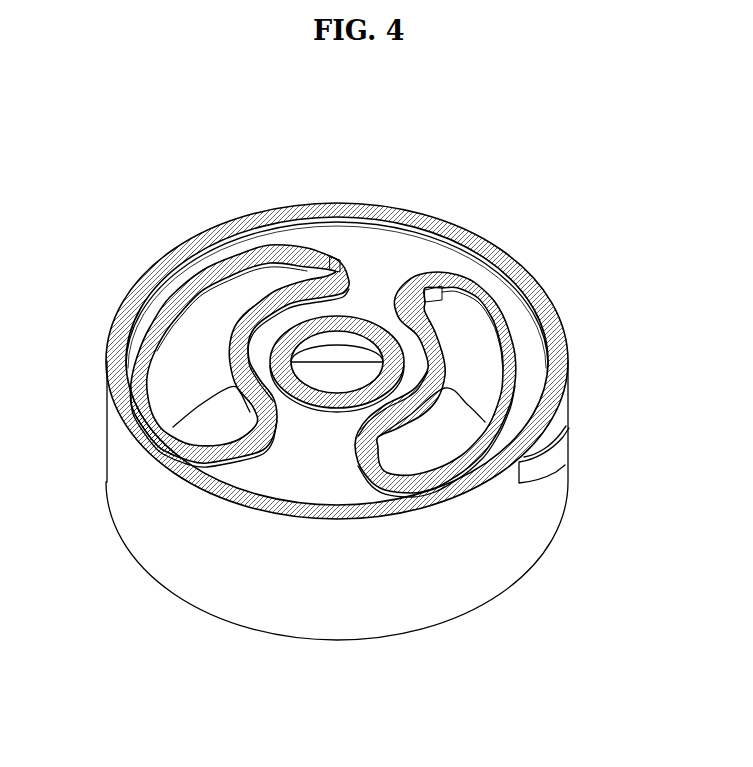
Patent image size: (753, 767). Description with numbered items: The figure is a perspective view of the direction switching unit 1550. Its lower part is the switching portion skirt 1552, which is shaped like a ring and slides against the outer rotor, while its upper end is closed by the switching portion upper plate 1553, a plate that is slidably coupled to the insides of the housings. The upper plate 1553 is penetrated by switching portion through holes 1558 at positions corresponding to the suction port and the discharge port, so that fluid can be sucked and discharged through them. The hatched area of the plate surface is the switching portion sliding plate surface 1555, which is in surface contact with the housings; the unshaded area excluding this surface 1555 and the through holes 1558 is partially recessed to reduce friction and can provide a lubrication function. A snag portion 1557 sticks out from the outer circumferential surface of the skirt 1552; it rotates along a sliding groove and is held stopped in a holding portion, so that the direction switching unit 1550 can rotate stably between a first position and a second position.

The direction switching unit 1550 is at (121, 106).
The switching portion skirt 1552 is at (145, 548).
The switching portion upper plate 1553 is at (503, 295).
The switching portion sliding plate surface 1555 is at (492, 248).
The snag portion 1557 is at (558, 459).
The switching portion through holes 1558 is at (199, 329).